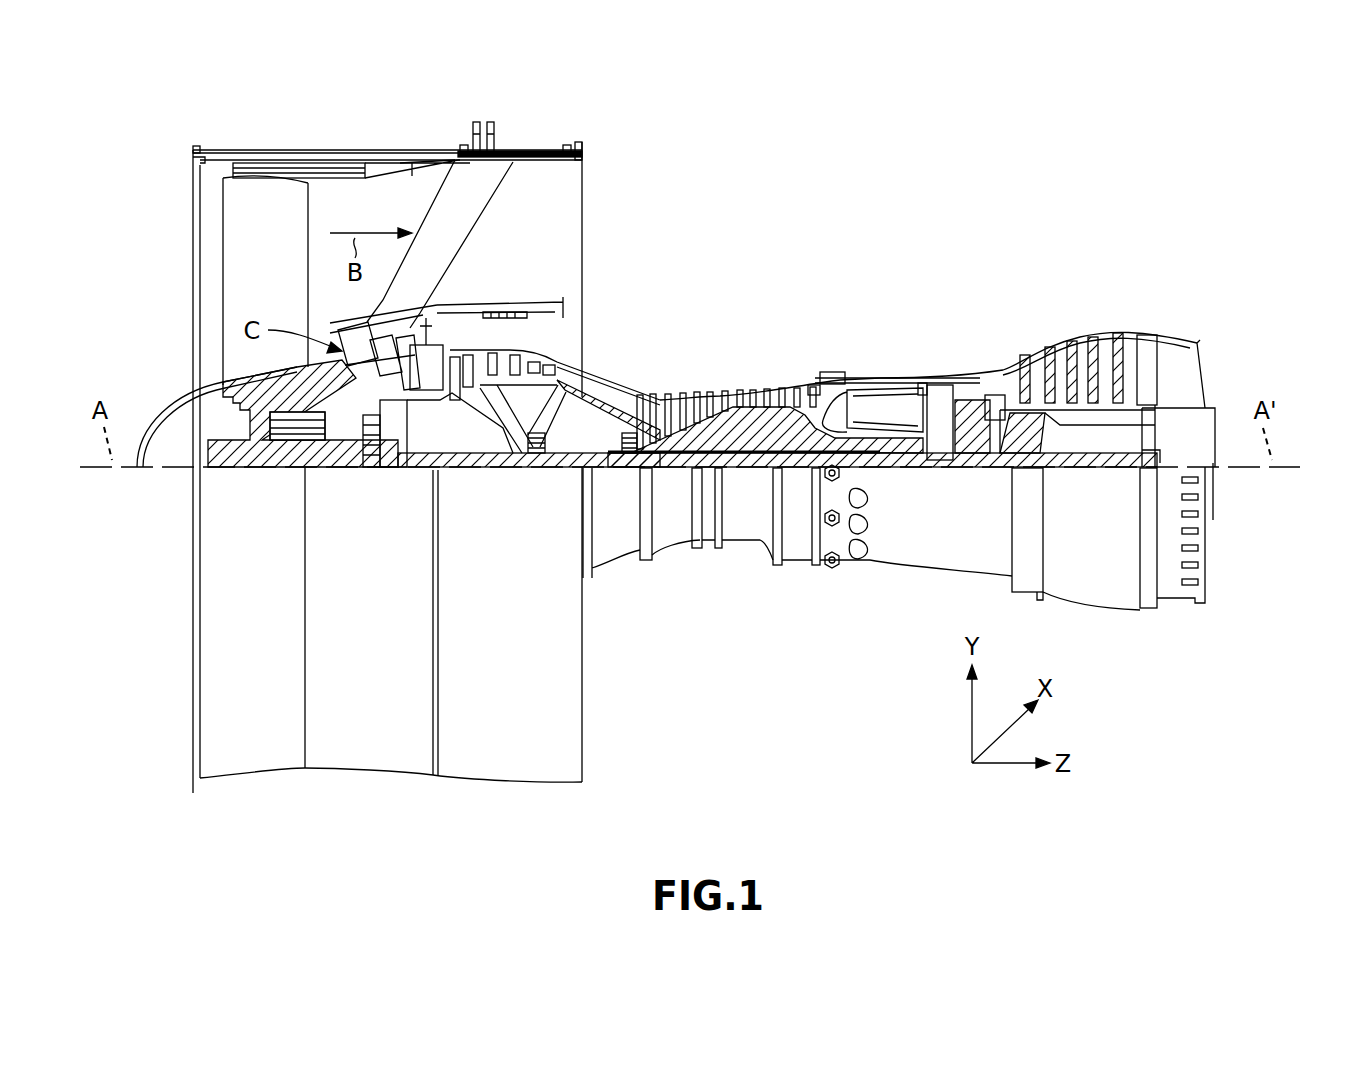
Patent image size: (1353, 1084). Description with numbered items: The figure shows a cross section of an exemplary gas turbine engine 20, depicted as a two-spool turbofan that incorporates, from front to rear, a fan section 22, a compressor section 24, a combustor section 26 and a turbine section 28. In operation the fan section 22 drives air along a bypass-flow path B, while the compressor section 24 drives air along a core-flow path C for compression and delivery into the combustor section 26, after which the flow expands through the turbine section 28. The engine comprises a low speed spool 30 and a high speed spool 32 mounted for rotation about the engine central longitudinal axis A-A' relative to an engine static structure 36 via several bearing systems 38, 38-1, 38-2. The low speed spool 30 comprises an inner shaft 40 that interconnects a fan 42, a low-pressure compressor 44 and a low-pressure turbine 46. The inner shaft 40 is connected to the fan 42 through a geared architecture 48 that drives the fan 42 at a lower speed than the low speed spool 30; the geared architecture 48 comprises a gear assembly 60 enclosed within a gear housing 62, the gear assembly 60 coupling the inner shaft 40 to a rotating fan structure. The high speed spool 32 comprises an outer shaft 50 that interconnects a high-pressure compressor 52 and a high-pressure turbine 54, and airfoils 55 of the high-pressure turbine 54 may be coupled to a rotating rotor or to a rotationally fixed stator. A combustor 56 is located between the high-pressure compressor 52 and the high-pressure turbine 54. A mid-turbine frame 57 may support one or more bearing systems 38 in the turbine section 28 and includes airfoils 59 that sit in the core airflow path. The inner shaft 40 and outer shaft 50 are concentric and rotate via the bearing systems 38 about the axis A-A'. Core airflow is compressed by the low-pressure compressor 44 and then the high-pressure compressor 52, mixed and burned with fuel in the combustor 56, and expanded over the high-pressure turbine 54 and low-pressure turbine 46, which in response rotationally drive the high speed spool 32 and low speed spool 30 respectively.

The gas turbine engine 20 is at (925, 184).
The fan section 22 is at (433, 129).
The compressor section 24 is at (440, 263).
The combustor section 26 is at (818, 263).
The turbine section 28 is at (1142, 263).
The low speed spool 30 is at (756, 490).
The high speed spool 32 is at (792, 437).
The engine static structure 36 is at (365, 770).
The bearing system 38 is at (988, 450).
The bearing system 38-1 is at (280, 445).
The bearing system 38-2 is at (532, 460).
The inner shaft 40 is at (605, 468).
The fan 42 is at (252, 281).
The low-pressure compressor 44 is at (513, 345).
The low-pressure turbine 46 is at (1077, 353).
The geared architecture 48 is at (398, 490).
The outer shaft 50 is at (870, 447).
The high-pressure compressor 52 is at (723, 430).
The high-pressure turbine 54 is at (943, 390).
The airfoils 55 is at (925, 390).
The combustor 56 is at (858, 407).
The mid-turbine frame 57 is at (990, 390).
The airfoils 59 is at (992, 423).
The gear assembly 60 is at (407, 447).
The gear housing 62 is at (403, 417).